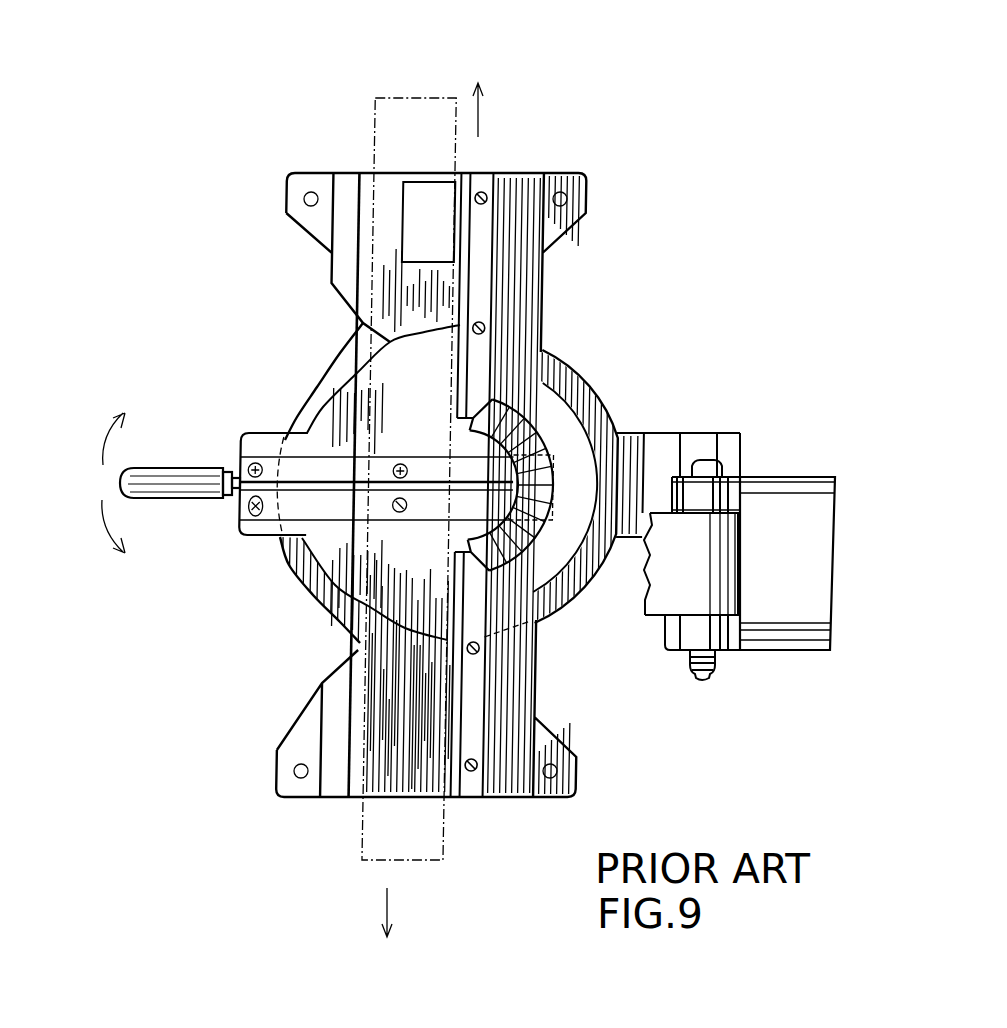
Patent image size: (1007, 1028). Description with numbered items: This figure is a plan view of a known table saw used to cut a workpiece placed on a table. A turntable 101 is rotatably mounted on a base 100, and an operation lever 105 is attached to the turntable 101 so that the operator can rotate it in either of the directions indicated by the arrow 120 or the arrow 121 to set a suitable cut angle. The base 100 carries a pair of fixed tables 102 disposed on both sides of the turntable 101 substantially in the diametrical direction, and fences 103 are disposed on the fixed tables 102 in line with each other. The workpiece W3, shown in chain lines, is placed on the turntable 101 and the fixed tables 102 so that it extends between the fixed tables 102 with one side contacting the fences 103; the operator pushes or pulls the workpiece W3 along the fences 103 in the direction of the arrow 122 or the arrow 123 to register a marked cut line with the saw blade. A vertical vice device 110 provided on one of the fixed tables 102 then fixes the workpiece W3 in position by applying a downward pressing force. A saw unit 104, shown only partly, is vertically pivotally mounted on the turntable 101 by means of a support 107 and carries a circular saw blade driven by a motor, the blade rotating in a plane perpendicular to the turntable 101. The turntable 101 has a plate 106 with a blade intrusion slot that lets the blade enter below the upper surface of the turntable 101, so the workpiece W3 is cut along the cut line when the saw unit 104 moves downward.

The base 100 is at (355, 352).
The turntable 101 is at (347, 563).
The fixed tables 102 is at (385, 183).
The fences 103 is at (480, 297).
The saw unit 104 is at (657, 610).
The operation lever 105 is at (168, 500).
The plate 106 is at (333, 467).
The support 107 is at (722, 637).
The vertical vice device 110 is at (433, 200).
The workpiece W3 is at (387, 228).
The arrow 120 is at (85, 526).
The arrow 121 is at (85, 439).
The arrow 122 is at (361, 911).
The arrow 123 is at (501, 111).